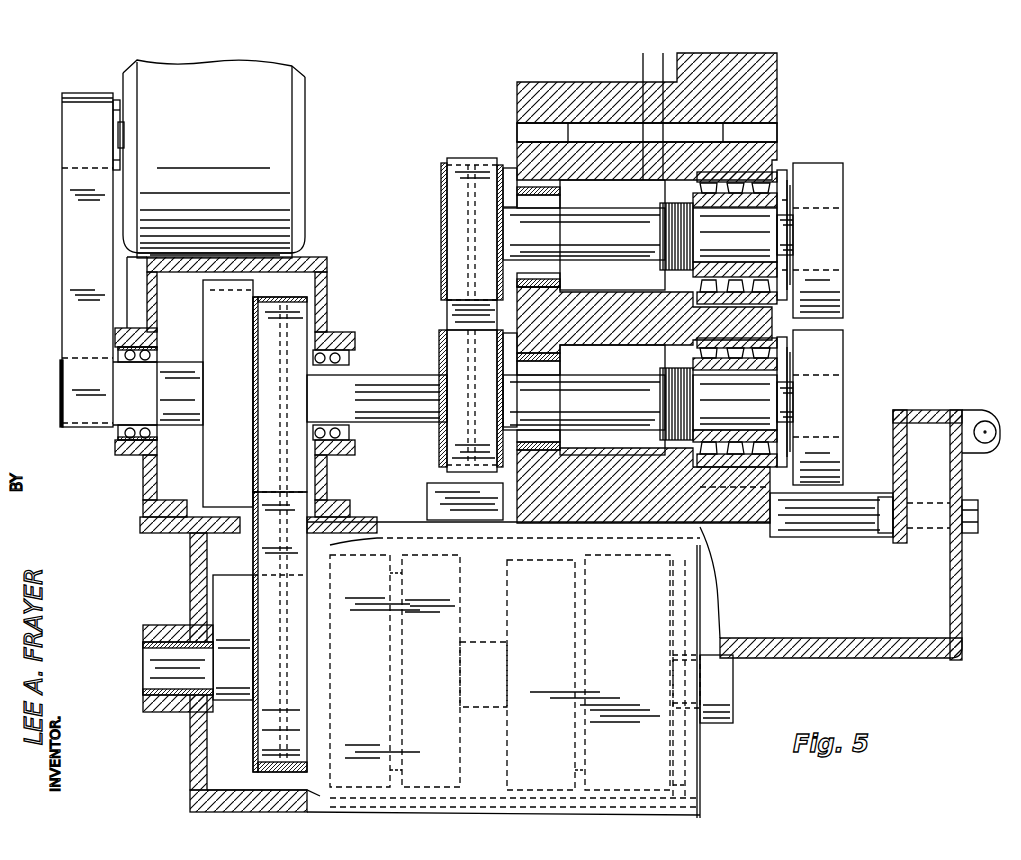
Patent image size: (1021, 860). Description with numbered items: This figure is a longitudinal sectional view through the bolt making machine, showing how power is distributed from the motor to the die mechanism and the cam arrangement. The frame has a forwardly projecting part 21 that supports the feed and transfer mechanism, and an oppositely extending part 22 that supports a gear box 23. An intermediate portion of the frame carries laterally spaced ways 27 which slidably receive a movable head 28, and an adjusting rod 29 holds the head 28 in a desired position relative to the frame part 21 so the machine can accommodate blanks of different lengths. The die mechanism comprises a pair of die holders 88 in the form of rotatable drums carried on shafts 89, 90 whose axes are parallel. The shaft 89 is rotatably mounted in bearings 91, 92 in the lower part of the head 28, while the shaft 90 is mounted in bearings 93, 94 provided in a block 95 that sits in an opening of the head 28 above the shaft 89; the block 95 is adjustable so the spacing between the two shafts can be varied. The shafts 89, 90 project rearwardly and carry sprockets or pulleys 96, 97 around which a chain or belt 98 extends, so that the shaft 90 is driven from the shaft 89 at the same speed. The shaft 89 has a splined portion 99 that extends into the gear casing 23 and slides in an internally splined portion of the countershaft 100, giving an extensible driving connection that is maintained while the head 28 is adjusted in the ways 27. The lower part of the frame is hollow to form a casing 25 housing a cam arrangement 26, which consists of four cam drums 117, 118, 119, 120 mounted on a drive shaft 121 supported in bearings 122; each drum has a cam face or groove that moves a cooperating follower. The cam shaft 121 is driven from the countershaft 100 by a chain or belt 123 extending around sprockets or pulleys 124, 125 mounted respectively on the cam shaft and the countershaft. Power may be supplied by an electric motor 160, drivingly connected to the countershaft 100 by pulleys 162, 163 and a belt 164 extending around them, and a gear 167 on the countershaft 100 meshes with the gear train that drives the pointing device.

The forwardly projecting part 21 is at (900, 414).
The oppositely extending part 22 is at (160, 534).
The gear box 23 is at (143, 502).
The casing 25 is at (690, 759).
The cam arrangement 26 is at (688, 780).
The ways 27 is at (427, 488).
The movable head 28 is at (777, 108).
The adjusting rod 29 is at (866, 505).
The die holders 88 is at (825, 165).
The shaft 89 is at (617, 423).
The shaft 90 is at (617, 254).
The bearing 91 is at (566, 432).
The bearing 92 is at (675, 436).
The bearing 93 is at (566, 262).
The bearing 94 is at (675, 266).
The block 95 is at (620, 138).
The sprocket or pulley 96 is at (439, 330).
The sprocket or pulley 97 is at (440, 174).
The chain or belt 98 is at (440, 292).
The splined portion 99 is at (381, 376).
The countershaft 100 is at (188, 416).
The cam drum 117 is at (358, 572).
The cam drum 118 is at (412, 574).
The cam drum 119 is at (535, 574).
The cam drum 120 is at (603, 574).
The drive shaft 121 is at (488, 638).
The bearings 122 is at (143, 642).
The chain or belt 123 is at (258, 551).
The sprocket or pulley 124 is at (250, 592).
The sprocket or pulley 125 is at (262, 300).
The electric motor 160 is at (297, 196).
The pulley 162 is at (58, 163).
The pulley 163 is at (60, 360).
The belt 164 is at (68, 261).
The gear 167 is at (212, 290).